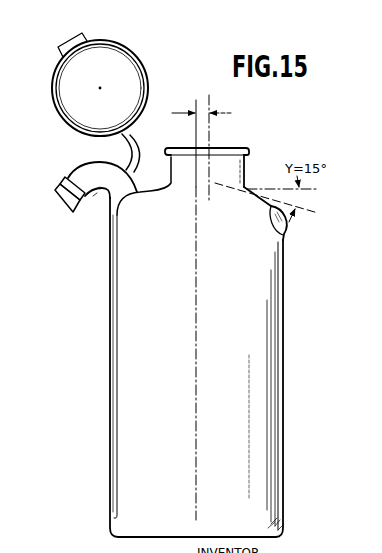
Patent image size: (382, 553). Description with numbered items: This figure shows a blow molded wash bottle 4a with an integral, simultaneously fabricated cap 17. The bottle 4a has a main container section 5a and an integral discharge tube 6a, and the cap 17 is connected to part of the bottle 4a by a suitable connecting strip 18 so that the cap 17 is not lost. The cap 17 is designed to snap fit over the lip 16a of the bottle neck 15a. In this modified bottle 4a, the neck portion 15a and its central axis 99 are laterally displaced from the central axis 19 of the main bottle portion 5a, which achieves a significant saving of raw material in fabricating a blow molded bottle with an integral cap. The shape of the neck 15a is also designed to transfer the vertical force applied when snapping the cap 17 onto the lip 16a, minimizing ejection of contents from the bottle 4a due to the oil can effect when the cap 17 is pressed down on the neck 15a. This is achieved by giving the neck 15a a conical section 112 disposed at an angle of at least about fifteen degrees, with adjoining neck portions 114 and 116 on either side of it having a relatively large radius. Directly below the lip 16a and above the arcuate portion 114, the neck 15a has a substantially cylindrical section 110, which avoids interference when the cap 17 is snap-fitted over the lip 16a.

The cap 17 is at (129, 47).
The connecting strip 18 is at (136, 147).
The discharge tube 6a is at (72, 171).
The bottle 4a is at (135, 277).
The main container section 5a is at (268, 360).
The bottle neck 15a is at (272, 188).
The cylindrical section 110 is at (250, 154).
The lip 16a is at (222, 149).
The conical section 112 is at (264, 199).
The arcuate neck portion 114 is at (241, 188).
The arcuate neck portion 116 is at (281, 238).
The central axis of the main bottle portion 19 is at (196, 103).
The central axis of the neck portion 99 is at (224, 149).